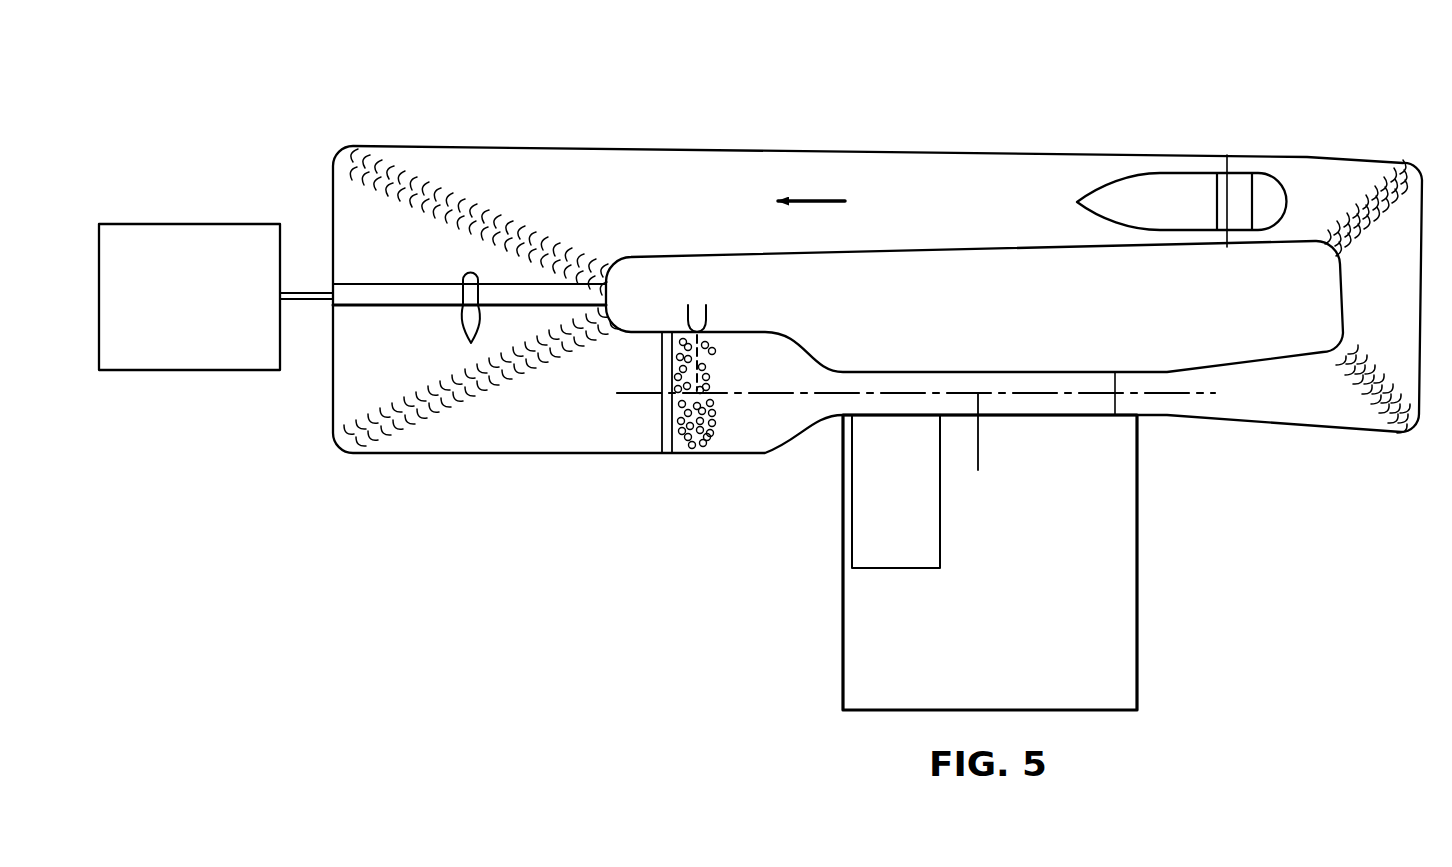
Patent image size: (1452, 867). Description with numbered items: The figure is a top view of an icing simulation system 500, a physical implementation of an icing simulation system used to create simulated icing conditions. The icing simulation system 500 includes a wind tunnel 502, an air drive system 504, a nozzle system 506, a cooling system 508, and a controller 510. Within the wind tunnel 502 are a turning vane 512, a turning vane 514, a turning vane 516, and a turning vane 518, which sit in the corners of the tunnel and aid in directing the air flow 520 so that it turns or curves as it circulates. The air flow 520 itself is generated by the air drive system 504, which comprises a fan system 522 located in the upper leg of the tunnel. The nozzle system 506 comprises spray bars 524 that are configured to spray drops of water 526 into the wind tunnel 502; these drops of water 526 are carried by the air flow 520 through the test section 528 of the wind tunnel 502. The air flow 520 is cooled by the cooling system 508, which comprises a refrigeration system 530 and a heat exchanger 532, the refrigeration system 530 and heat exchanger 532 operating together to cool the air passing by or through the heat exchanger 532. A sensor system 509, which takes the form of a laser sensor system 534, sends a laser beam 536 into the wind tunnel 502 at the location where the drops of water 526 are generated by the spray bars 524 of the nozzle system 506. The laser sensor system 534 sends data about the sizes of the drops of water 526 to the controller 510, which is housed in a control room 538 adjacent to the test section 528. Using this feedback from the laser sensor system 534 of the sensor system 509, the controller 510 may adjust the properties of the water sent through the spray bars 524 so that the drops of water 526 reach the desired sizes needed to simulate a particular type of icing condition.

The icing simulation system 500 is at (1224, 68).
The wind tunnel 502 is at (965, 150).
The air drive system 504 is at (1165, 173).
The nozzle system 506 is at (636, 465).
The cooling system 508 is at (249, 197).
The sensor system 509 is at (721, 313).
The controller 510 is at (942, 493).
The turning vane 512 is at (557, 211).
The turning vane 514 is at (553, 378).
The turning vane 516 is at (1376, 364).
The turning vane 518 is at (1379, 229).
The air flow 520 is at (834, 190).
The fan system 522 is at (1245, 173).
The spray bars 524 is at (681, 454).
The drops of water 526 is at (720, 439).
The test section 528 is at (1047, 380).
The refrigeration system 530 is at (169, 342).
The heat exchanger 532 is at (398, 293).
The laser sensor system 534 is at (686, 306).
The laser beam 536 is at (698, 353).
The control room 538 is at (1009, 672).